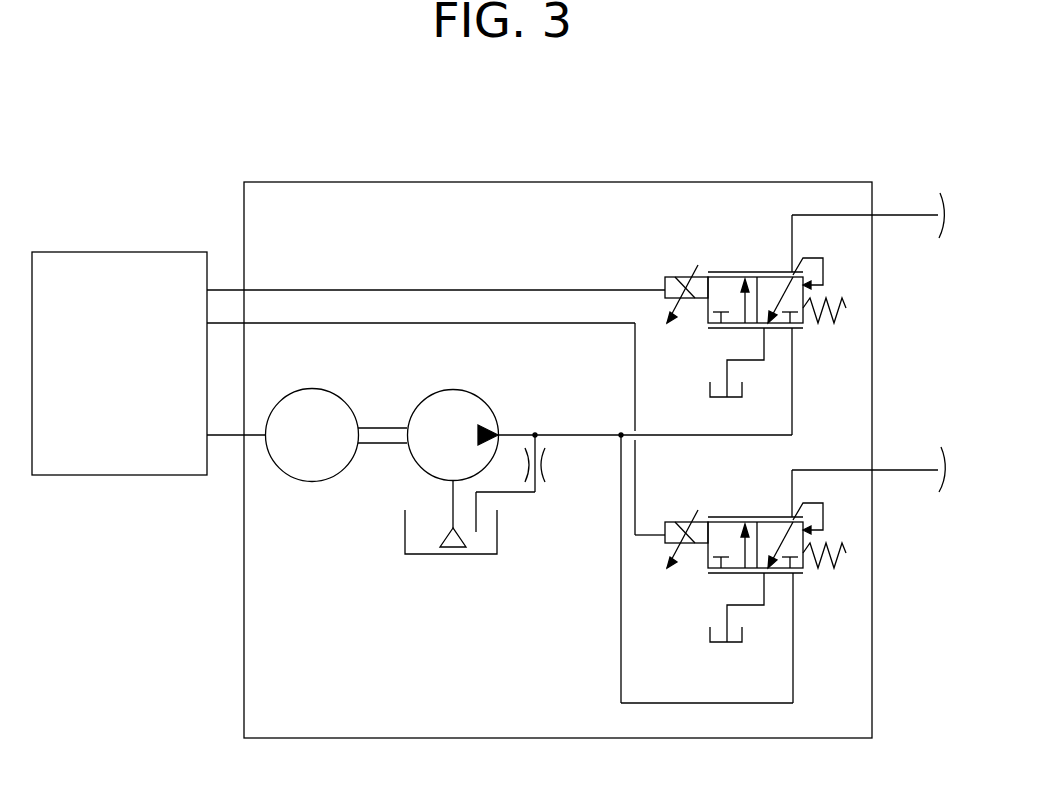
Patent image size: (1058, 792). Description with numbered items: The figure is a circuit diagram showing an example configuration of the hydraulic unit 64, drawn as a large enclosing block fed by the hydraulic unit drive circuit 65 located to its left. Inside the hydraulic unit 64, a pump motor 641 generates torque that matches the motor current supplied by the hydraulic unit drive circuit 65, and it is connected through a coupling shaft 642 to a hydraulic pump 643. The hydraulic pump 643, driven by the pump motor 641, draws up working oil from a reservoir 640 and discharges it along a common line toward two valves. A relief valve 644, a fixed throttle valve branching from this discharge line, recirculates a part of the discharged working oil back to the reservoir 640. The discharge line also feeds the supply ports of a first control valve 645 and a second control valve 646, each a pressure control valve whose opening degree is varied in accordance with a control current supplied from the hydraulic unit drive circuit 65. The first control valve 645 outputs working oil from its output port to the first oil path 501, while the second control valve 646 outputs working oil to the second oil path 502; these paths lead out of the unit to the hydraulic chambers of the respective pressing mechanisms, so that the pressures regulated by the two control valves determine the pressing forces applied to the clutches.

The hydraulic unit 64 is at (298, 177).
The hydraulic unit drive circuit 65 is at (80, 247).
The reservoir 640 is at (498, 533).
The pump motor 641 is at (305, 390).
The coupling shaft 642 is at (383, 425).
The hydraulic pump 643 is at (450, 390).
The relief valve 644 is at (543, 463).
The first control valve 645 is at (737, 270).
The second control valve 646 is at (730, 513).
The first oil path 501 is at (913, 212).
The second oil path 502 is at (912, 468).